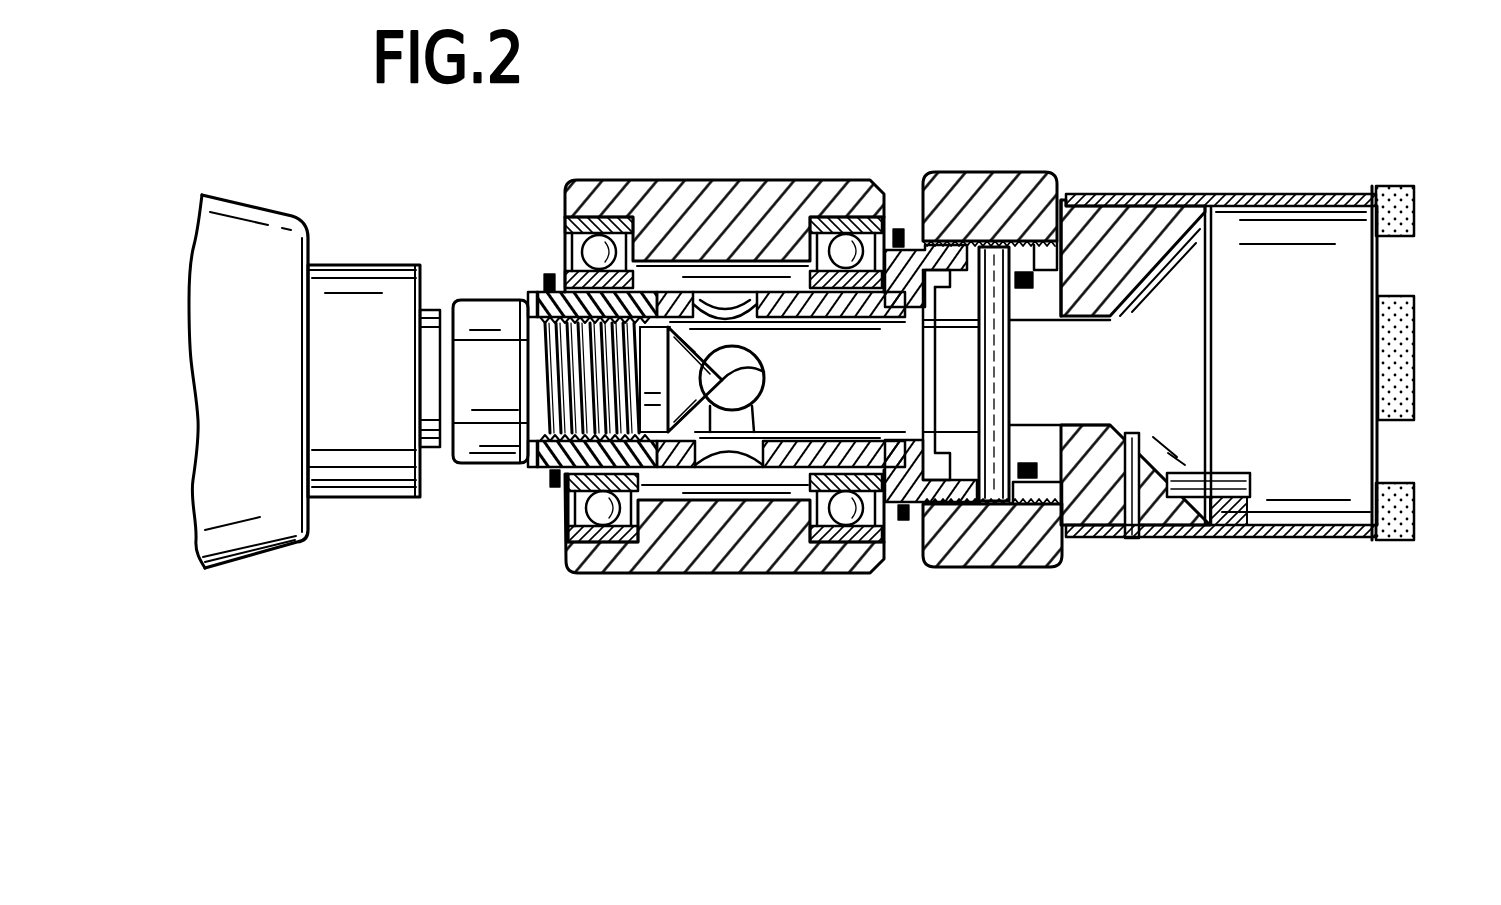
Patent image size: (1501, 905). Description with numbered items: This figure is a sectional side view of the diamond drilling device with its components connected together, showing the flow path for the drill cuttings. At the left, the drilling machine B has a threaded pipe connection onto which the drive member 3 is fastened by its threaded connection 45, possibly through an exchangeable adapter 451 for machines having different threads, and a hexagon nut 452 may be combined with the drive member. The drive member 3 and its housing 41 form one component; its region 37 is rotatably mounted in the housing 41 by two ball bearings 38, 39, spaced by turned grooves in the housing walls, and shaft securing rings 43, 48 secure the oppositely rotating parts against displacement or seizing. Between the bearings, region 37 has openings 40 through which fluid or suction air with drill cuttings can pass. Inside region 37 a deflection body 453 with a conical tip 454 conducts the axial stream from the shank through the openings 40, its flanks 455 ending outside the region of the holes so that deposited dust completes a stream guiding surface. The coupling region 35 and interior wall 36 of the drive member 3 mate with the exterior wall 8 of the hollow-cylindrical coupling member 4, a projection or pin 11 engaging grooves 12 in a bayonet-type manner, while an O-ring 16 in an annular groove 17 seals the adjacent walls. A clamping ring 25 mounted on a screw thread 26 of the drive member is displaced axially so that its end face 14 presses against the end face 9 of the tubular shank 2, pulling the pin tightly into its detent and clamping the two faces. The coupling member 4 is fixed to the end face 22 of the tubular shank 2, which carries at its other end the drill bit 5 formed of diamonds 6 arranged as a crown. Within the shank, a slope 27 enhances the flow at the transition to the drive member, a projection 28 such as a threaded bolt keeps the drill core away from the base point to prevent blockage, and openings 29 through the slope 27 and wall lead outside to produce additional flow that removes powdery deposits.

The drilling machine B is at (295, 508).
The hexagon nut 452 is at (381, 360).
The exchangeable adapter 451 is at (508, 317).
The threaded connection 45 is at (470, 497).
The deflection body 453 is at (665, 303).
The flanks 455 is at (712, 468).
The region 37 is at (535, 480).
The shaft securing ring 48 is at (553, 493).
The conical tip 454 is at (758, 368).
The openings 40 is at (747, 388).
The housing 41 is at (725, 190).
The ball bearing 38 is at (842, 237).
The ball bearing 39 is at (583, 573).
The interior wall 36 is at (926, 316).
The drive member 3 is at (897, 500).
The coupling member 4 is at (903, 226).
The shaft securing ring 43 is at (900, 523).
The clamping ring 25 is at (970, 183).
The screw thread 26 is at (1028, 504).
The coupling region 35 is at (1030, 272).
The exterior wall 8 is at (947, 270).
The grooves 12 is at (965, 465).
The projection 11 is at (996, 390).
The annular groove 17 is at (1034, 290).
The O-ring 16 is at (1028, 463).
The end face 9 is at (1057, 215).
The end face 22 is at (1074, 198).
The end face 14 is at (1090, 210).
The slope 27 is at (1183, 533).
The openings 29 is at (1138, 540).
The projection 28 is at (1237, 497).
The tubular shank 2 is at (1272, 195).
The drill bit 5 is at (1374, 442).
The diamonds 6 is at (1392, 188).